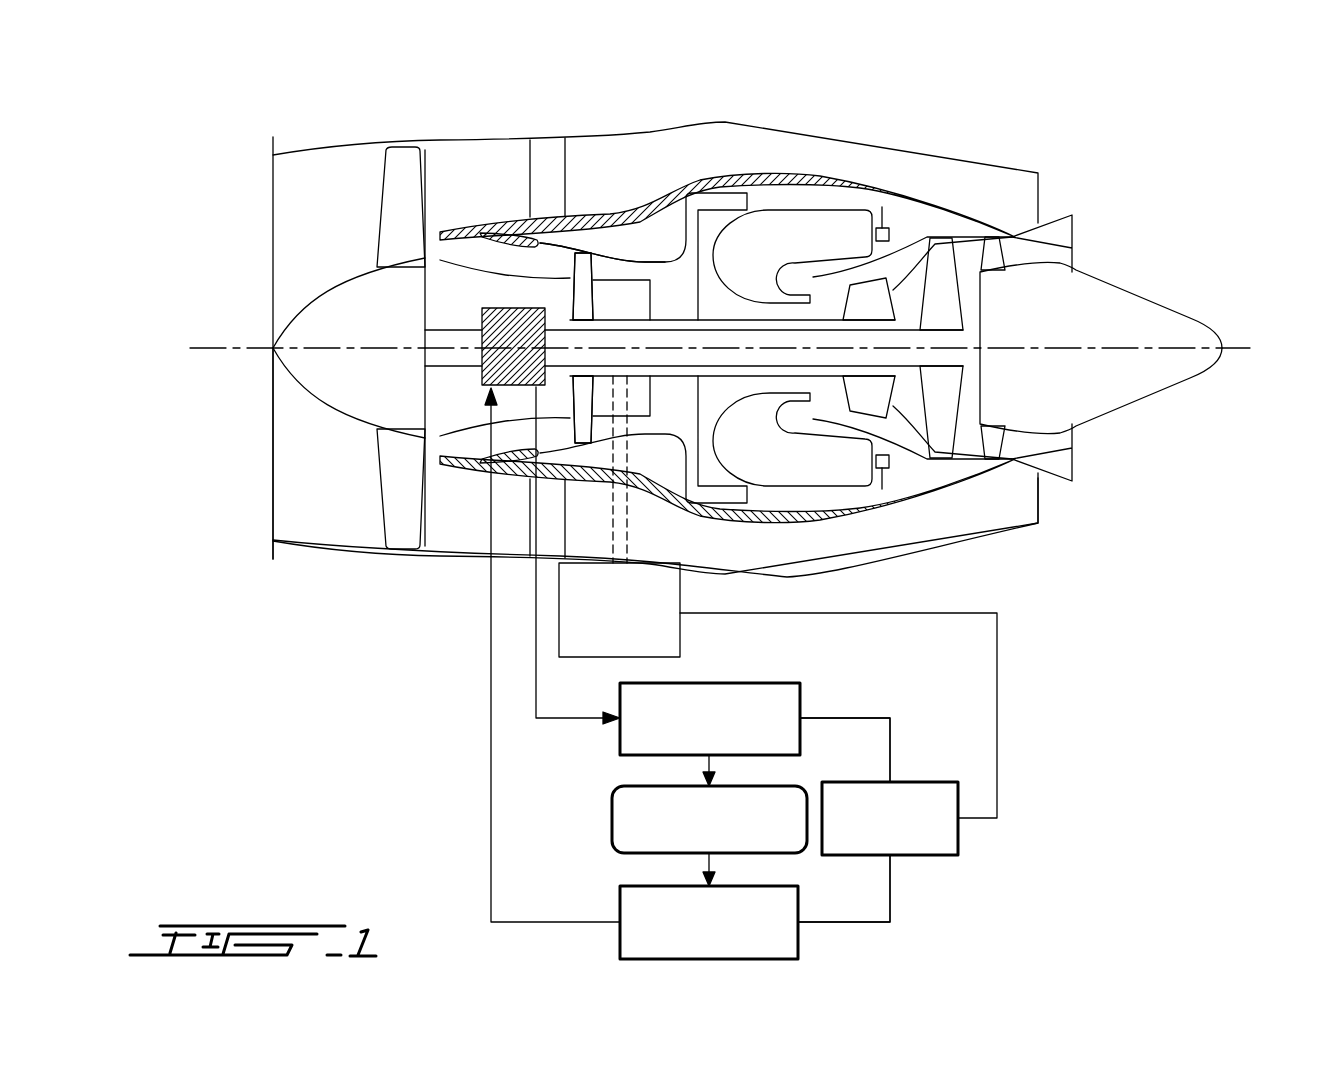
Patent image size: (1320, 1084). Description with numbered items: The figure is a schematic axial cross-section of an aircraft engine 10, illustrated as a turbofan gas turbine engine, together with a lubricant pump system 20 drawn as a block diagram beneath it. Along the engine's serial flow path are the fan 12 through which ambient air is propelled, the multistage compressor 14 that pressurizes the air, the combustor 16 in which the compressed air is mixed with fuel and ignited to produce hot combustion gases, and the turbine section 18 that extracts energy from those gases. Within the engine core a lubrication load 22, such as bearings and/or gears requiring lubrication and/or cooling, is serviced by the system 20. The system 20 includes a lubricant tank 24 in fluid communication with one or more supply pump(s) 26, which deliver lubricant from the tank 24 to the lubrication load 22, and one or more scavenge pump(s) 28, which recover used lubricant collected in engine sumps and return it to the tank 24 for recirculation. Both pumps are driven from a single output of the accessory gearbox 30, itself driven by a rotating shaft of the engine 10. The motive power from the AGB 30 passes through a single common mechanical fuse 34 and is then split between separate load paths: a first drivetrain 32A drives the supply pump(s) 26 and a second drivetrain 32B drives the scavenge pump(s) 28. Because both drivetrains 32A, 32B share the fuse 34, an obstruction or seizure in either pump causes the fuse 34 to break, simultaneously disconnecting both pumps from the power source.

The aircraft engine 10 is at (914, 128).
The fan 12 is at (398, 477).
The multistage compressor 14 is at (625, 268).
The combustor 16 is at (797, 228).
The turbine section 18 is at (907, 405).
The lubricant pump system 20 is at (460, 745).
The lubrication load 22 is at (510, 308).
The lubricant tank 24 is at (612, 821).
The supply pump(s) 26 is at (620, 907).
The scavenge pump(s) 28 is at (619, 736).
The accessory gearbox 30 is at (680, 638).
The first drivetrain 32A is at (890, 897).
The second drivetrain 32B is at (867, 717).
The mechanical fuse 34 is at (959, 835).